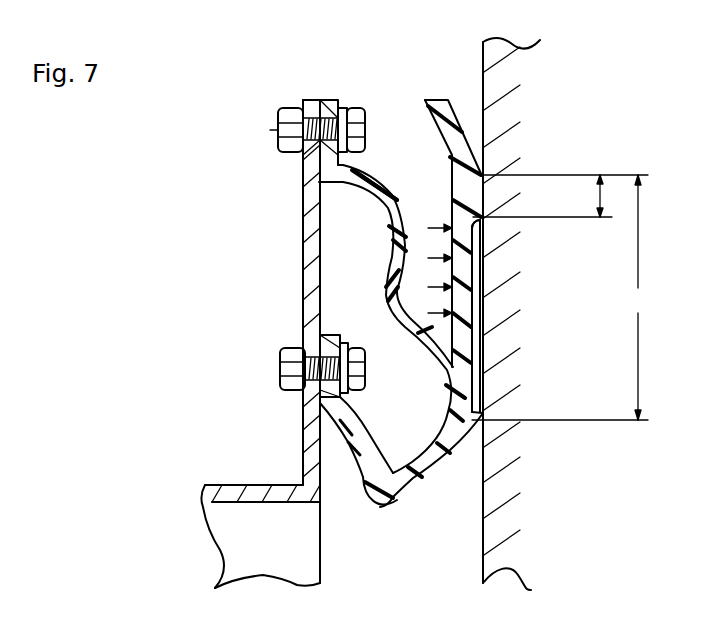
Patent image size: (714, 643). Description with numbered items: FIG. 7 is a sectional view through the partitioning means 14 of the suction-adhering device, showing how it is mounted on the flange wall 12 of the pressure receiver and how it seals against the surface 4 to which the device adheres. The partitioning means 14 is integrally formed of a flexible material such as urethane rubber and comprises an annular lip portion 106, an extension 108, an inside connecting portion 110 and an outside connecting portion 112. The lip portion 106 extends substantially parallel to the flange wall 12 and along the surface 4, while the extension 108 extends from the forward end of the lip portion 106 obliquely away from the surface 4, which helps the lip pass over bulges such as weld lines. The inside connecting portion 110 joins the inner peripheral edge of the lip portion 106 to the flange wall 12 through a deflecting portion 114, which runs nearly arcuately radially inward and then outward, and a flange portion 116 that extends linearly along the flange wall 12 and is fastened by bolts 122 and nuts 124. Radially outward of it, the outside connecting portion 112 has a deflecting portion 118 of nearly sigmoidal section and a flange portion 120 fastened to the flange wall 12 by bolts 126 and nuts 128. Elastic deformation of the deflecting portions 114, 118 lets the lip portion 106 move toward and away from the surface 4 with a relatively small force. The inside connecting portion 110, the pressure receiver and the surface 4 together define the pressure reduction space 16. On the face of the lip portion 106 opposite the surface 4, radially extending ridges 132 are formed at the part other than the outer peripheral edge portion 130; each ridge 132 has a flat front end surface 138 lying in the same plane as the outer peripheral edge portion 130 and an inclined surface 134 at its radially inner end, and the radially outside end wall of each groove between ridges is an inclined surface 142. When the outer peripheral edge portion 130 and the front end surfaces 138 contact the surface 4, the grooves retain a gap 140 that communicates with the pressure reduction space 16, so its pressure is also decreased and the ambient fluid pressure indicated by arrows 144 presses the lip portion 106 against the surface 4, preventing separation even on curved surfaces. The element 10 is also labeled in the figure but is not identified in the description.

The surface 4 is at (470, 62).
The base 10 is at (233, 483).
The flange wall 12 is at (303, 278).
The partitioning means 14 is at (397, 516).
The pressure reduction space 16 is at (467, 495).
The lip portion 106 is at (568, 297).
The extension 108 is at (423, 125).
The inside connecting portion 110 is at (420, 482).
The outside connecting portion 112 is at (403, 208).
The deflecting portion 114 is at (427, 453).
The flange portion 116 is at (327, 339).
The deflecting portion 118 is at (388, 268).
The flange portion 120 is at (330, 90).
The bolts 122 is at (282, 352).
The nuts 124 is at (371, 372).
The bolts 126 is at (270, 130).
The nuts 128 is at (360, 128).
The outer peripheral edge portion 130 is at (602, 197).
The ridges 132 is at (484, 318).
The inclined surface 134 is at (474, 408).
The front end surface 138 is at (479, 293).
The gap 140 is at (477, 358).
The inclined surface 142 is at (478, 226).
The arrows 144 is at (428, 258).